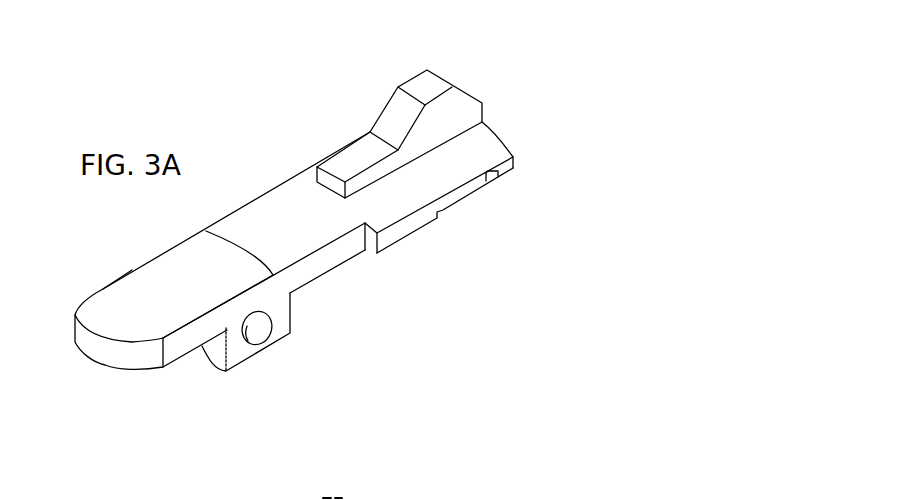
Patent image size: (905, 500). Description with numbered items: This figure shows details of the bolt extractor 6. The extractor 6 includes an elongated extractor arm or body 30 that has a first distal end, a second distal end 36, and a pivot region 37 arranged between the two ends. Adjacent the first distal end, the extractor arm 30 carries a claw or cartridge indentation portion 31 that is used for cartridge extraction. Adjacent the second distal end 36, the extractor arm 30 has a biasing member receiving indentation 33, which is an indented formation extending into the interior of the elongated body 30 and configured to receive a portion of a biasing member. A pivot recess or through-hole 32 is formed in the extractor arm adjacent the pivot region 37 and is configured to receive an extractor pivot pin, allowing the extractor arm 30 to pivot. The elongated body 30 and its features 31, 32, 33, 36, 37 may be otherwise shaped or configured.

The extractor 6 is at (531, 54).
The extractor arm 30 is at (262, 199).
The cartridge indentation portion 31 is at (487, 189).
The pivot recess 32 is at (265, 338).
The biasing member receiving indentation 33 is at (532, 145).
The second distal end 36 is at (76, 393).
The pivot region 37 is at (263, 404).